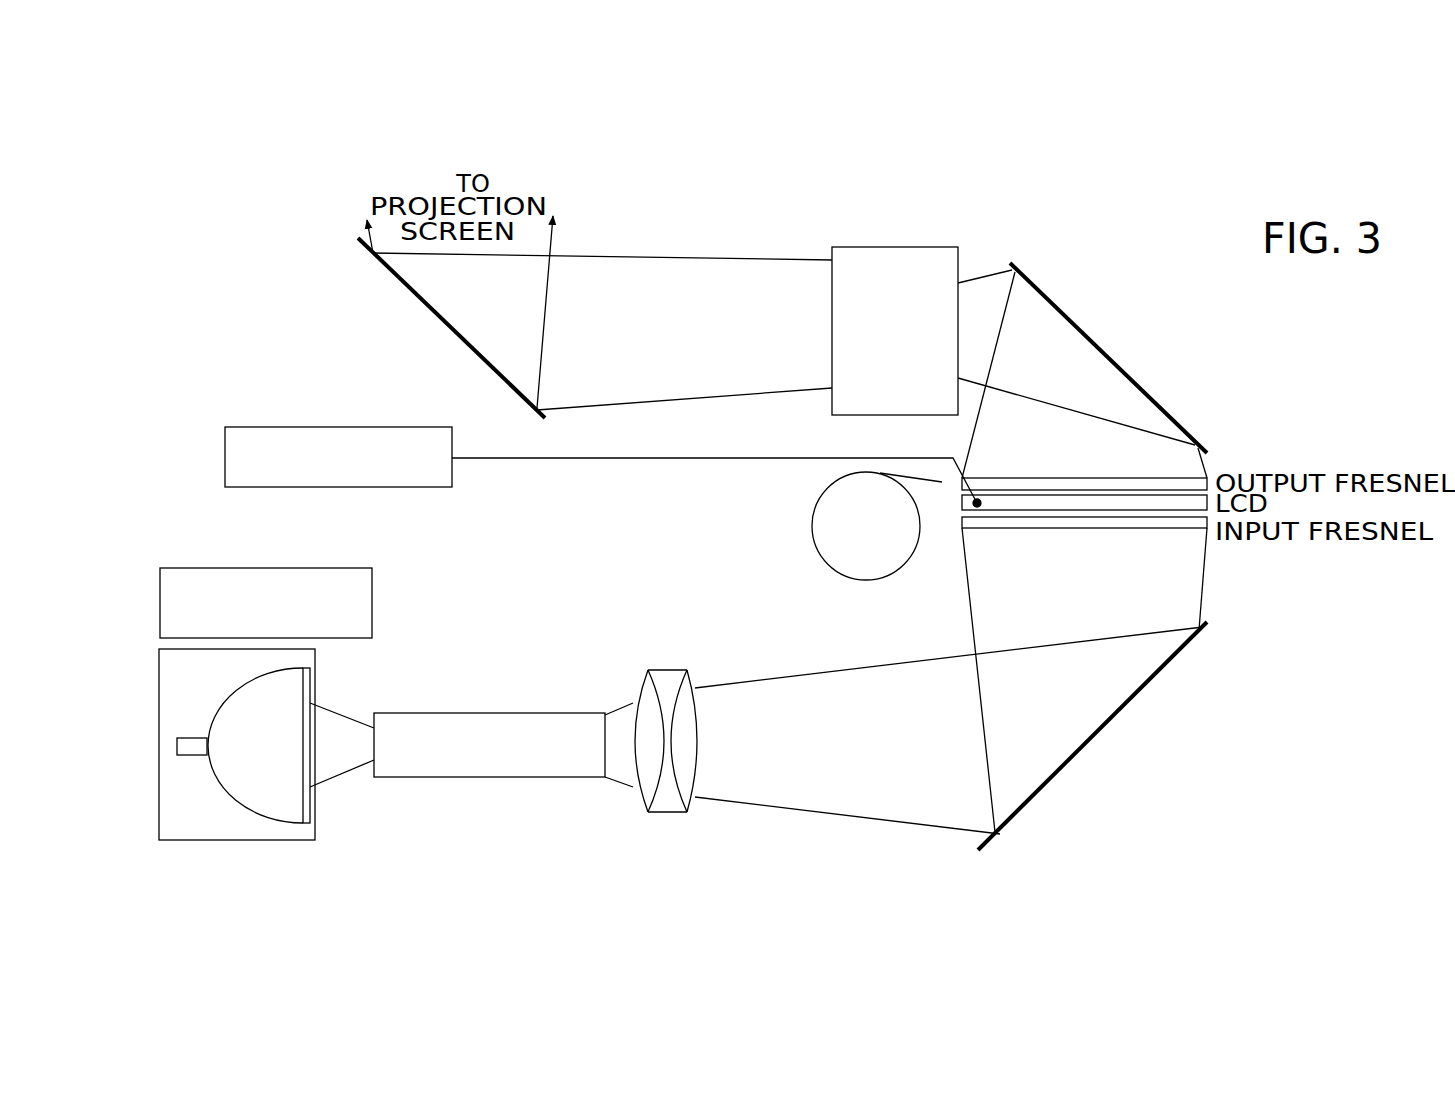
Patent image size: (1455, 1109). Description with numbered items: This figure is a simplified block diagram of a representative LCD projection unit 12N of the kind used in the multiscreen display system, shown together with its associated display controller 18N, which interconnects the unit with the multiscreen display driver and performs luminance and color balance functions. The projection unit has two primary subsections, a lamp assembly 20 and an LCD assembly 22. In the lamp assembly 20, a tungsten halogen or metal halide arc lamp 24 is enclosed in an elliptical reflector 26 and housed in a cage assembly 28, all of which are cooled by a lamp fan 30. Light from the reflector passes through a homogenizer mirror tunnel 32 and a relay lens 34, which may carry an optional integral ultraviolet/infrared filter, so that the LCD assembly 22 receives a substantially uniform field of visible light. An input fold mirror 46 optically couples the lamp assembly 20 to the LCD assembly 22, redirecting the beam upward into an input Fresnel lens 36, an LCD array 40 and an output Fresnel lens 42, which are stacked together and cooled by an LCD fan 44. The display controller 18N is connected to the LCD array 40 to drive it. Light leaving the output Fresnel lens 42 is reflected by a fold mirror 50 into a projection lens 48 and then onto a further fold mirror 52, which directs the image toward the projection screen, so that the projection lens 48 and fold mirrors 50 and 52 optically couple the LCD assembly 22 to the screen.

The LCD projection unit 12N is at (1143, 868).
The display controller 18N is at (255, 430).
The lamp assembly 20 is at (590, 622).
The LCD assembly 22 is at (755, 562).
The arc lamp 24 is at (195, 752).
The elliptical reflector 26 is at (238, 690).
The cage assembly 28 is at (317, 833).
The lamp fan 30 is at (330, 568).
The homogenizer mirror tunnel 32 is at (437, 765).
The relay lens 34 is at (667, 675).
The input Fresnel lens 36 is at (1112, 523).
The LCD array 40 is at (1107, 505).
The output Fresnel lens 42 is at (1028, 483).
The LCD fan 44 is at (830, 505).
The input fold mirror 46 is at (1138, 697).
The projection lens 48 is at (853, 403).
The fold mirror 50 is at (1128, 374).
The fold mirror 52 is at (483, 360).